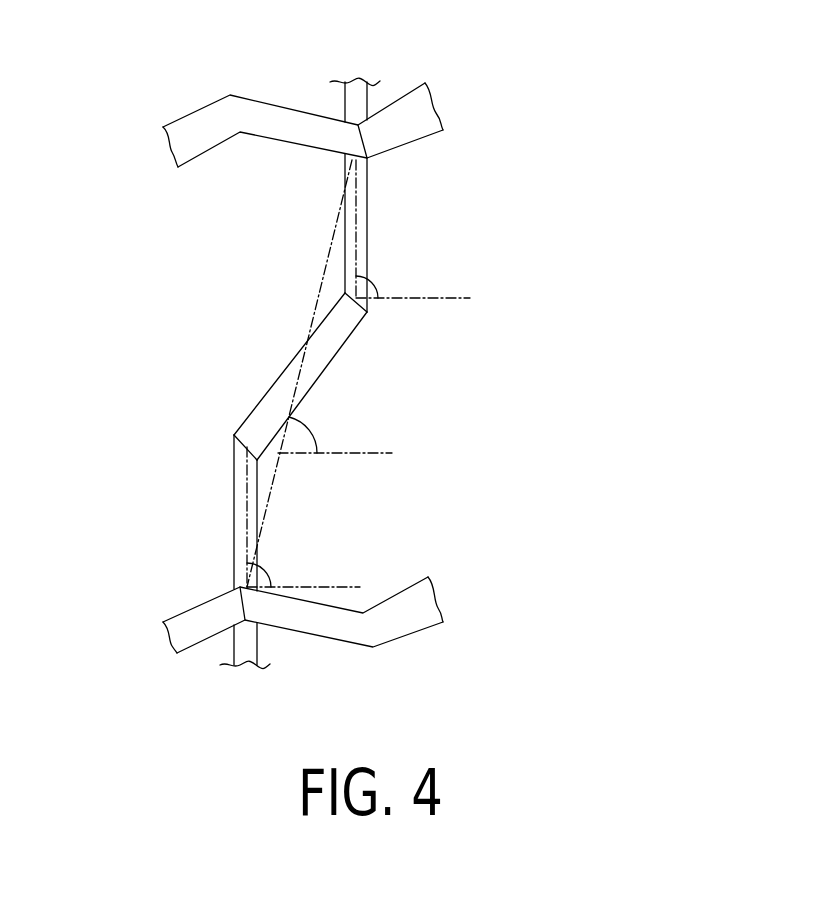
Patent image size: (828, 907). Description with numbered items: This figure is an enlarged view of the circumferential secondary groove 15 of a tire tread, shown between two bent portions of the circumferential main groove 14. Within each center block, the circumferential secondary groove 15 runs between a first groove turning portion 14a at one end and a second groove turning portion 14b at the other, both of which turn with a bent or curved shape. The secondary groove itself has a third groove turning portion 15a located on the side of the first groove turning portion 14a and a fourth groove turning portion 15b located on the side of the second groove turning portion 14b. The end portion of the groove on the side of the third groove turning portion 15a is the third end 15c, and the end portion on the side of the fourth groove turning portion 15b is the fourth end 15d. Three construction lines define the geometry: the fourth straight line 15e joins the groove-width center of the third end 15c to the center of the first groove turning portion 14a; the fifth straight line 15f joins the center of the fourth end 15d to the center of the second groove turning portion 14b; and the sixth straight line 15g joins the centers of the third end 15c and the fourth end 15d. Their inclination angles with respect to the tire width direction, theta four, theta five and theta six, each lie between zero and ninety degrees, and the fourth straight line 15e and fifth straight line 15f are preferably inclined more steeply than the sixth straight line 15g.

The circumferential main groove 14 is at (296, 371).
The first groove turning portion 14a is at (247, 604).
The second groove turning portion 14b is at (358, 143).
The circumferential secondary groove 15 is at (340, 372).
The third groove turning portion 15a is at (235, 438).
The fourth groove turning portion 15b is at (356, 305).
The third end 15c is at (242, 582).
The fourth end 15d is at (347, 170).
The fourth straight line 15e is at (247, 527).
The fifth straight line 15f is at (356, 212).
The sixth straight line 15g is at (315, 320).